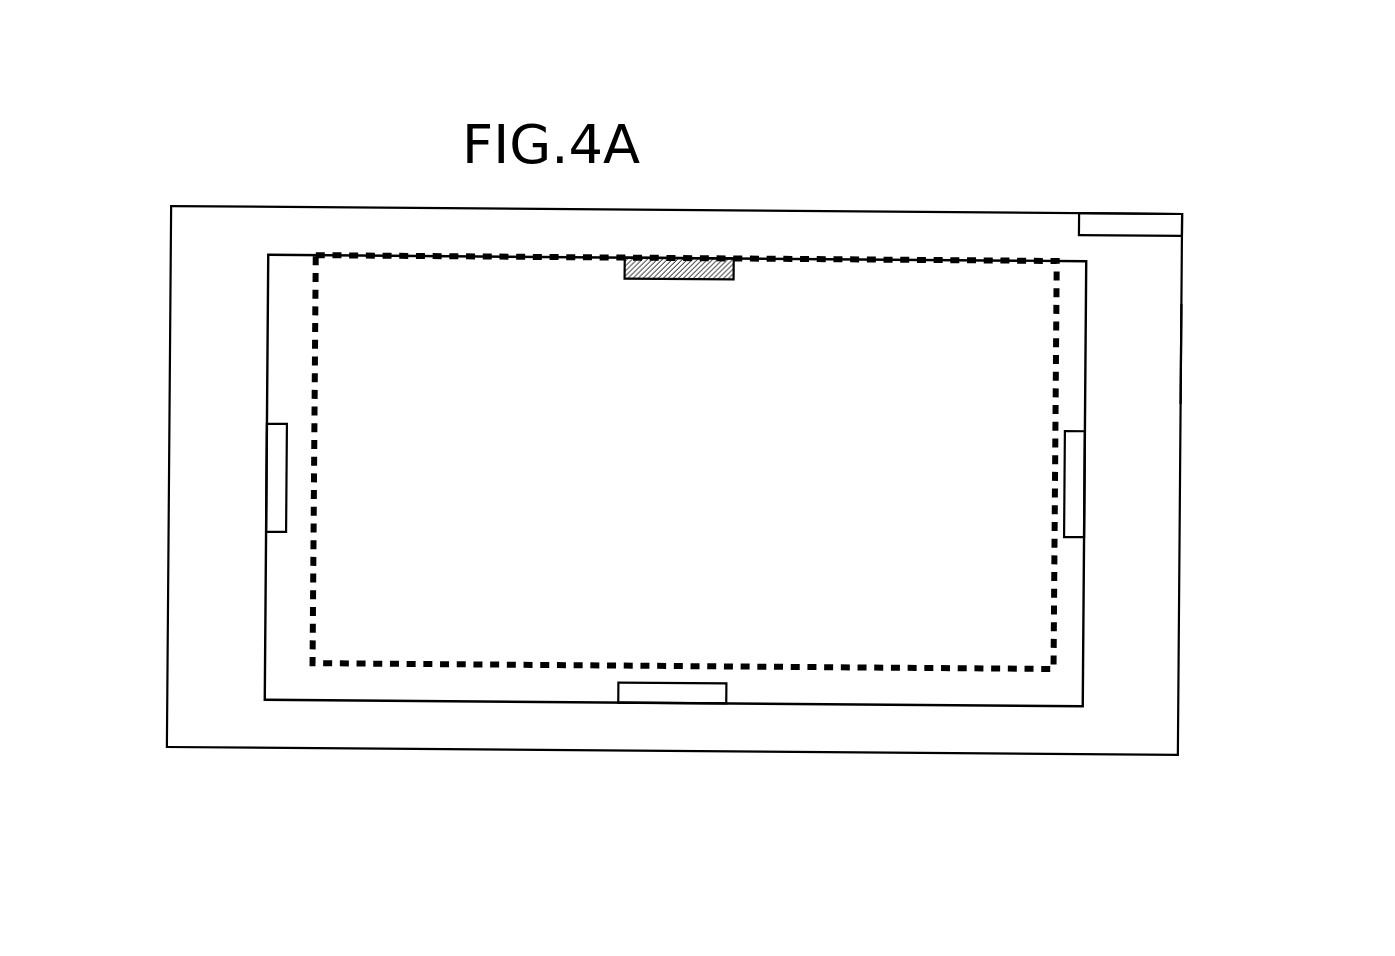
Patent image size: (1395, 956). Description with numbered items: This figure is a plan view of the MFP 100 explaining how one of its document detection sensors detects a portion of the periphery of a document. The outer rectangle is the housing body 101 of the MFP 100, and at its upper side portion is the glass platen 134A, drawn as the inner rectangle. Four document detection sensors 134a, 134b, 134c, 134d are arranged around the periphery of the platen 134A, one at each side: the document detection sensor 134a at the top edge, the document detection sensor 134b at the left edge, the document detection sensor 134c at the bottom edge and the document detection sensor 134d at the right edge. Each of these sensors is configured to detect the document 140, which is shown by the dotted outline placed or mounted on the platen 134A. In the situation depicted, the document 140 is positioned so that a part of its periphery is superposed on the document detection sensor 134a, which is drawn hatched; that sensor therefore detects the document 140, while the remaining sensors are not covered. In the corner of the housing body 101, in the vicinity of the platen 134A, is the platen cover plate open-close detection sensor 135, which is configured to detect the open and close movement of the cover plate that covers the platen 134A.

The MFP 100 is at (1298, 210).
The housing body 101 is at (1187, 333).
The document 140 is at (912, 290).
The platen cover plate open-close detection sensor 135 is at (1123, 225).
The platen 134A is at (289, 265).
The document detection sensor 134a is at (690, 268).
The document detection sensor 134b is at (277, 498).
The document detection sensor 134c is at (678, 705).
The document detection sensor 134d is at (1075, 457).